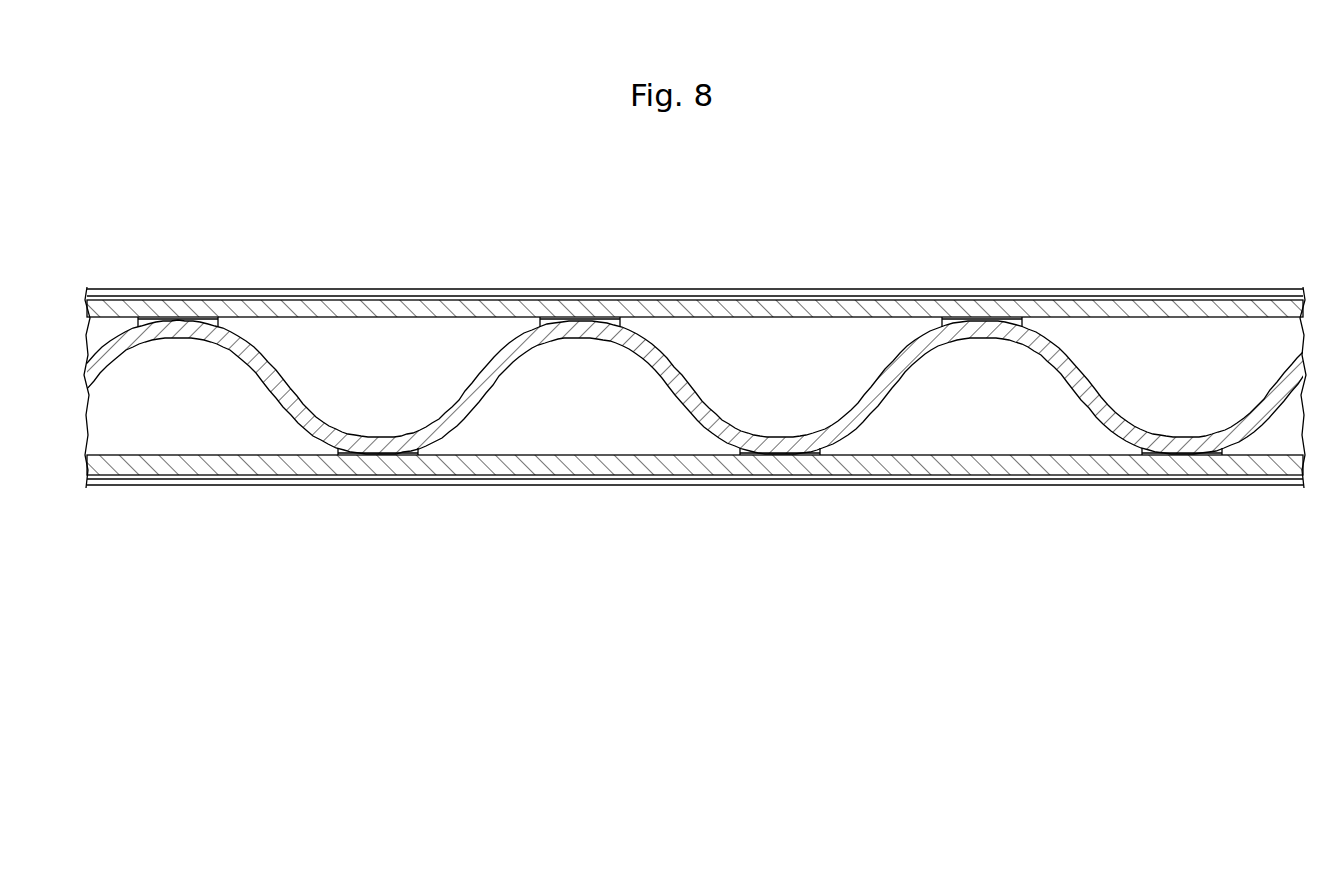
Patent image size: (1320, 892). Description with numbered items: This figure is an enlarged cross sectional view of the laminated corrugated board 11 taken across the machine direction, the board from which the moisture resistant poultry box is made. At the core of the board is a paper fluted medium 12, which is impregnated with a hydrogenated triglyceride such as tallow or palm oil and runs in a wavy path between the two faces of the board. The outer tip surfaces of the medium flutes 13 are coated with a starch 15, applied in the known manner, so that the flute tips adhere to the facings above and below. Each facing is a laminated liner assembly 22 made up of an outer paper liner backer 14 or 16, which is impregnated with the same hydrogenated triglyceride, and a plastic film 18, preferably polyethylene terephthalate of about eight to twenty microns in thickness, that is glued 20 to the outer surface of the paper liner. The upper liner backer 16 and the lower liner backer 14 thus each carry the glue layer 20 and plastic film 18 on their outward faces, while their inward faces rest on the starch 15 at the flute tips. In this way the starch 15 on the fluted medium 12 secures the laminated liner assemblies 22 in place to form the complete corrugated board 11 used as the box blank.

The corrugated board 11 is at (633, 537).
The paper fluted medium 12 is at (465, 395).
The medium flutes 13 is at (1046, 340).
The outer paper liner backer 14 is at (197, 468).
The starch 15 is at (942, 318).
The outer paper liner backer 16 is at (295, 305).
The plastic film 18 is at (1140, 289).
The glue 20 is at (1200, 293).
The laminated liner assembly 22 is at (1284, 453).